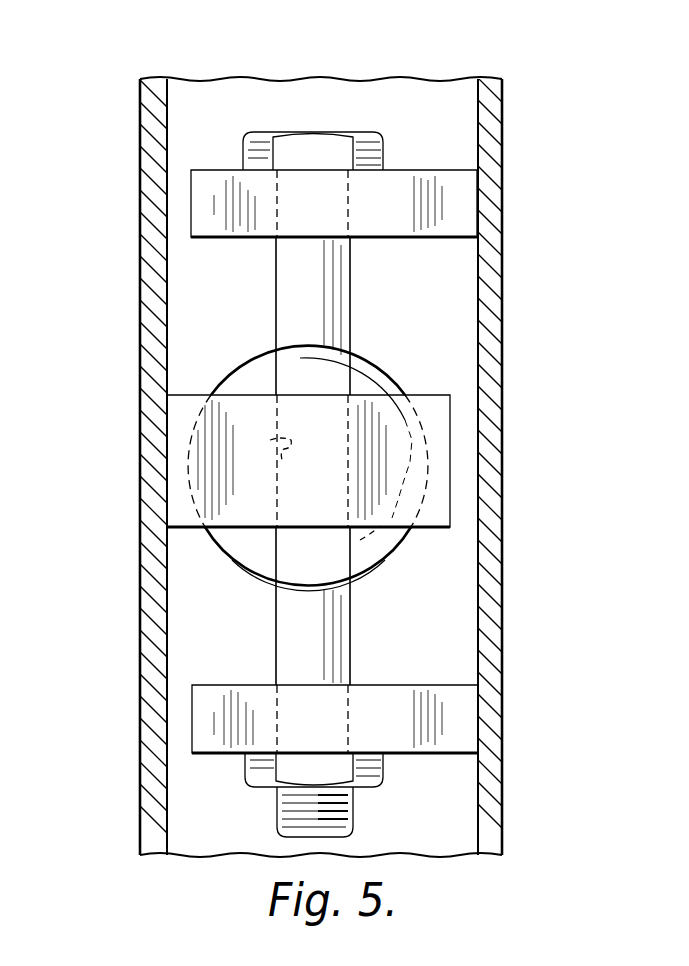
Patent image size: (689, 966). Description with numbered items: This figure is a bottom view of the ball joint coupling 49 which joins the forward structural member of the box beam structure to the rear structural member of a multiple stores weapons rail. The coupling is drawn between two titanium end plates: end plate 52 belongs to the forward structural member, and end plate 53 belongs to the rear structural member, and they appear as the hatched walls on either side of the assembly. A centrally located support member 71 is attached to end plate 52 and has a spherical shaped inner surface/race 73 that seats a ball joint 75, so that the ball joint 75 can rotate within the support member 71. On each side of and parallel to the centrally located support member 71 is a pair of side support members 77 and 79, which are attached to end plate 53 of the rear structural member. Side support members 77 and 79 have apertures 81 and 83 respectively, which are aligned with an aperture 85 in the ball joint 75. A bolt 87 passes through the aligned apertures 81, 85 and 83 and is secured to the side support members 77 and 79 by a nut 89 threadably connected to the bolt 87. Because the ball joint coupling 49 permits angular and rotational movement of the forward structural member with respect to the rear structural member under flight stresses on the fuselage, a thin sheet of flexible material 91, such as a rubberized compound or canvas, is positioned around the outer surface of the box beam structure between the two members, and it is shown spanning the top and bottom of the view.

The ball joint coupling 49 is at (407, 105).
The thin sheet of flexible material 91 is at (287, 79).
The end plate 52 is at (140, 645).
The end plate 53 is at (503, 655).
The side support member 77 is at (250, 237).
The aperture 81 is at (338, 205).
The bolt 87 is at (350, 304).
The ball joint 75 is at (378, 362).
The spherical shaped inner surface/race 73 is at (413, 463).
The aperture 85 is at (262, 446).
The centrally located support member 71 is at (195, 527).
The side support member 79 is at (242, 685).
The aperture 83 is at (338, 708).
The nut 89 is at (383, 787).